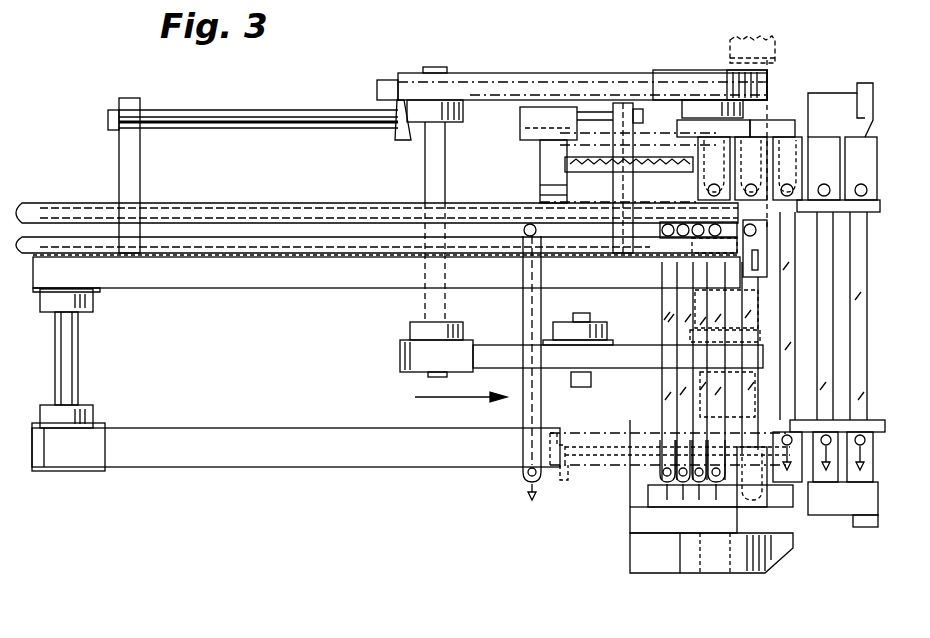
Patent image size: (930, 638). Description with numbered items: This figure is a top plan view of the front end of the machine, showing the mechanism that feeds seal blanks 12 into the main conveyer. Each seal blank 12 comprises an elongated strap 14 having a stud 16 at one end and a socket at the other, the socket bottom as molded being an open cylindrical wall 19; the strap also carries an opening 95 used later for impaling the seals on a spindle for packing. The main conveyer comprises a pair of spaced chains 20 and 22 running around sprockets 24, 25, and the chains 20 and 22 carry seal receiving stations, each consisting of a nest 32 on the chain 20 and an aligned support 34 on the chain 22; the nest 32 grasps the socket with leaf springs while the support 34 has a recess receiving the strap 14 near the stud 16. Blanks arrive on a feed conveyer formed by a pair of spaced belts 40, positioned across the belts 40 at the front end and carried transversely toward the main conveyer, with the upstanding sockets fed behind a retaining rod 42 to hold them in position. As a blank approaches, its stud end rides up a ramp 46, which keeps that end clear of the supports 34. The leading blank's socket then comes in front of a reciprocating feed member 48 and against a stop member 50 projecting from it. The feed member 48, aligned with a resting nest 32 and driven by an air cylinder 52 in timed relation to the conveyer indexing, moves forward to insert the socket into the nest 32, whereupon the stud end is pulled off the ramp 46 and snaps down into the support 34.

The plastic seal blank 12 is at (441, 402).
The elongated strap 14 is at (526, 310).
The stud 16 is at (528, 492).
The cylindrical wall 19 is at (528, 226).
The chain 20 is at (808, 140).
The chain 22 is at (775, 550).
The sprocket 24 is at (843, 140).
The sprocket 25 is at (793, 507).
The nest 32 is at (848, 140).
The support 34 is at (833, 500).
The spaced belts 40 is at (187, 290).
The retaining rod 42 is at (265, 240).
The ramp 46 is at (655, 496).
The reciprocating feed member 48 is at (740, 262).
The stop member 50 is at (757, 228).
The air cylinder 52 is at (730, 45).
The opening 95 is at (533, 466).